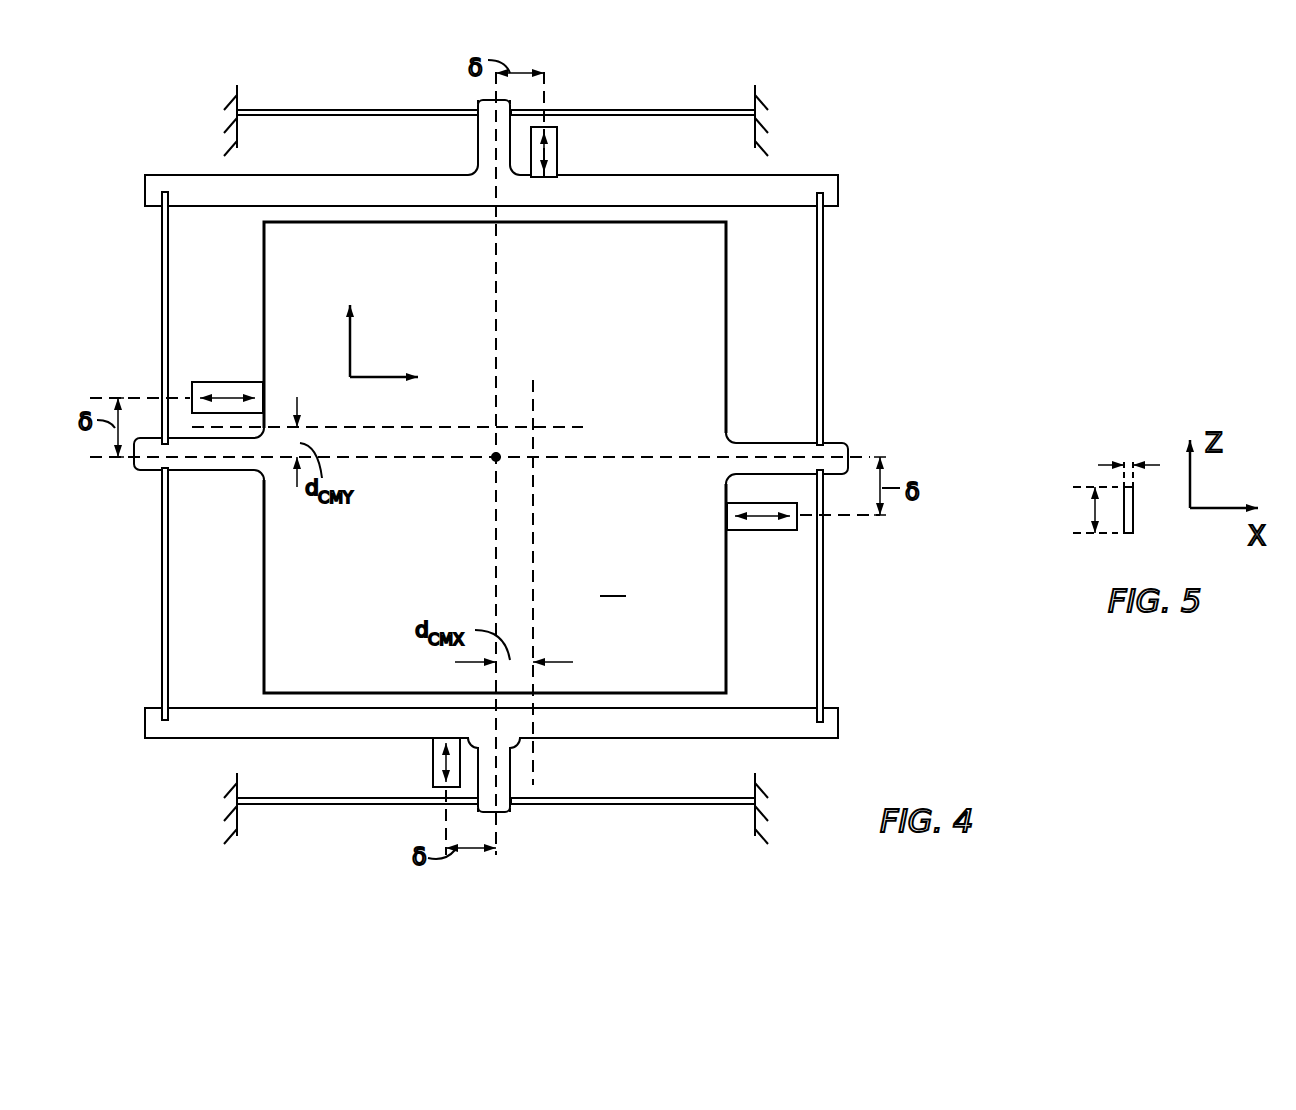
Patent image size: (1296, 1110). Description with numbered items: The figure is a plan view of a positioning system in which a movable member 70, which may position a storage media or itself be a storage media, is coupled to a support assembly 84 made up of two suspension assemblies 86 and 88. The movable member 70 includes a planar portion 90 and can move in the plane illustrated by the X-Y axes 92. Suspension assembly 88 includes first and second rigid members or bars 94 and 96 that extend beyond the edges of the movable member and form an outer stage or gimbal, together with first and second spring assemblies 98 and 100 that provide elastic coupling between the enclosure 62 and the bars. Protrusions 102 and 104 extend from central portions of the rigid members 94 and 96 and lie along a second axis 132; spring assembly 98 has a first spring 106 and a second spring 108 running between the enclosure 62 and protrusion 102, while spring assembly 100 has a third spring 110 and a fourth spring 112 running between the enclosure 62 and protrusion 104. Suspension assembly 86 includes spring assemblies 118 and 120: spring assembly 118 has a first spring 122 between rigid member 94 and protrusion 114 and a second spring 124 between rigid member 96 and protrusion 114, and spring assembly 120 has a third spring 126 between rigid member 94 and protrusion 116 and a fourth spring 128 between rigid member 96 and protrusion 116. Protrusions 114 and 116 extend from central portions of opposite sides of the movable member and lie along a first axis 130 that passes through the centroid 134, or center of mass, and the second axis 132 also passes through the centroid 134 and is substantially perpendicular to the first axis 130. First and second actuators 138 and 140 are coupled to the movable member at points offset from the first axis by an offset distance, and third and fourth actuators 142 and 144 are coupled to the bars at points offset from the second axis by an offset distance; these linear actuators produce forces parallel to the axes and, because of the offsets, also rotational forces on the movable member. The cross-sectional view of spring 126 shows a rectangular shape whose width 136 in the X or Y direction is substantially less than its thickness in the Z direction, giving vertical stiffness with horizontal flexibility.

In FIG. 4, the enclosure 62 is at (762, 100).
In FIG. 4, the movable member 70 is at (614, 583).
In FIG. 4, the support assembly 84 is at (702, 102).
In FIG. 4, the suspension assembly 86 is at (872, 632).
In FIG. 4, the suspension assembly 88 is at (395, 104).
In FIG. 4, the planar portion 90 is at (712, 275).
In FIG. 4, the X-Y axes 92 is at (382, 380).
In FIG. 4, the first rigid member 94 is at (838, 190).
In FIG. 4, the second rigid member 96 is at (797, 738).
In FIG. 4, the first spring assembly 98 is at (568, 100).
In FIG. 4, the second spring assembly 100 is at (570, 822).
In FIG. 4, the protrusion 102 is at (482, 103).
In FIG. 4, the protrusion 104 is at (510, 812).
In FIG. 4, the first spring 106 is at (612, 108).
In FIG. 4, the second spring 108 is at (365, 108).
In FIG. 4, the third spring 110 is at (308, 805).
In FIG. 4, the fourth spring 112 is at (650, 805).
In FIG. 4, the protrusion 114 is at (145, 475).
In FIG. 4, the protrusion 116 is at (850, 445).
In FIG. 4, the spring assembly 118 is at (148, 312).
In FIG. 4, the spring assembly 120 is at (850, 300).
In FIG. 4, the first spring 122 is at (160, 232).
In FIG. 4, the second spring 124 is at (160, 660).
In FIG. 4, the third spring 126 is at (825, 232).
In FIG. 5, the third spring 126 is at (1133, 520).
In FIG. 4, the fourth spring 128 is at (826, 692).
In FIG. 4, the first axis 130 is at (595, 462).
In FIG. 4, the second axis 132 is at (498, 322).
In FIG. 4, the centroid 134 is at (494, 460).
In FIG. 5, the width 136 is at (1127, 462).
In FIG. 4, the first actuator 138 is at (236, 383).
In FIG. 5, the first actuator 138 is at (1092, 508).
In FIG. 4, the second actuator 140 is at (745, 531).
In FIG. 4, the third actuator 142 is at (558, 166).
In FIG. 4, the fourth actuator 144 is at (433, 765).